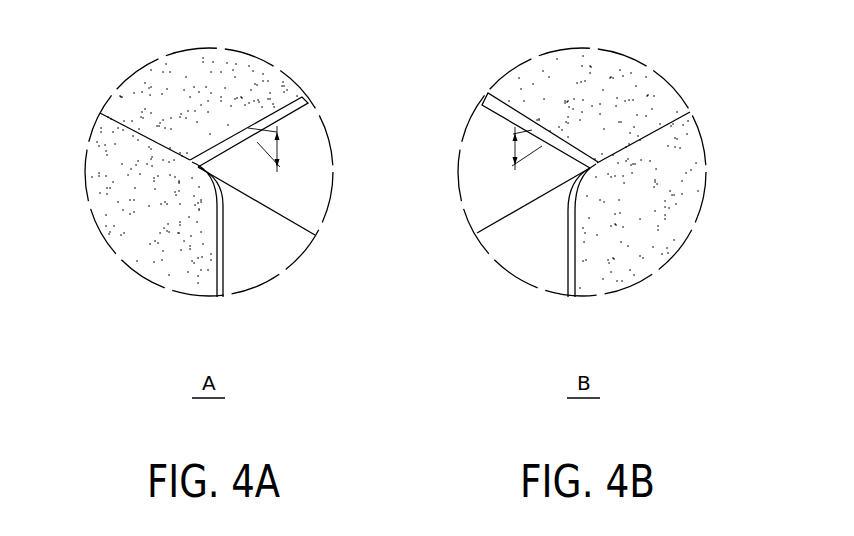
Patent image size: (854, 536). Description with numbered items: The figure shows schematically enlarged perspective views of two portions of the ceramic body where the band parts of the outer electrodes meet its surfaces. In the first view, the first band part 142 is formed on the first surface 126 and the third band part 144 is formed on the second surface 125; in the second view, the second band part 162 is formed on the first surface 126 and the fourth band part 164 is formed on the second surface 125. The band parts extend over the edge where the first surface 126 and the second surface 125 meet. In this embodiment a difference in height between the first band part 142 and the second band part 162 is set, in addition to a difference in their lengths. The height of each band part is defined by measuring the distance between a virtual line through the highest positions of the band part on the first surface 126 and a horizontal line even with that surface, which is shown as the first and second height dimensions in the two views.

In FIG. 4A, the second surface 125 is at (263, 265).
In FIG. 4B, the second surface 125 is at (533, 265).
In FIG. 4A, the first surface 126 is at (320, 185).
In FIG. 4B, the first surface 126 is at (477, 182).
In FIG. 4A, the first band part 142 is at (165, 70).
In FIG. 4A, the third band part 144 is at (125, 220).
In FIG. 4B, the second band part 162 is at (625, 68).
In FIG. 4B, the fourth band part 164 is at (665, 222).